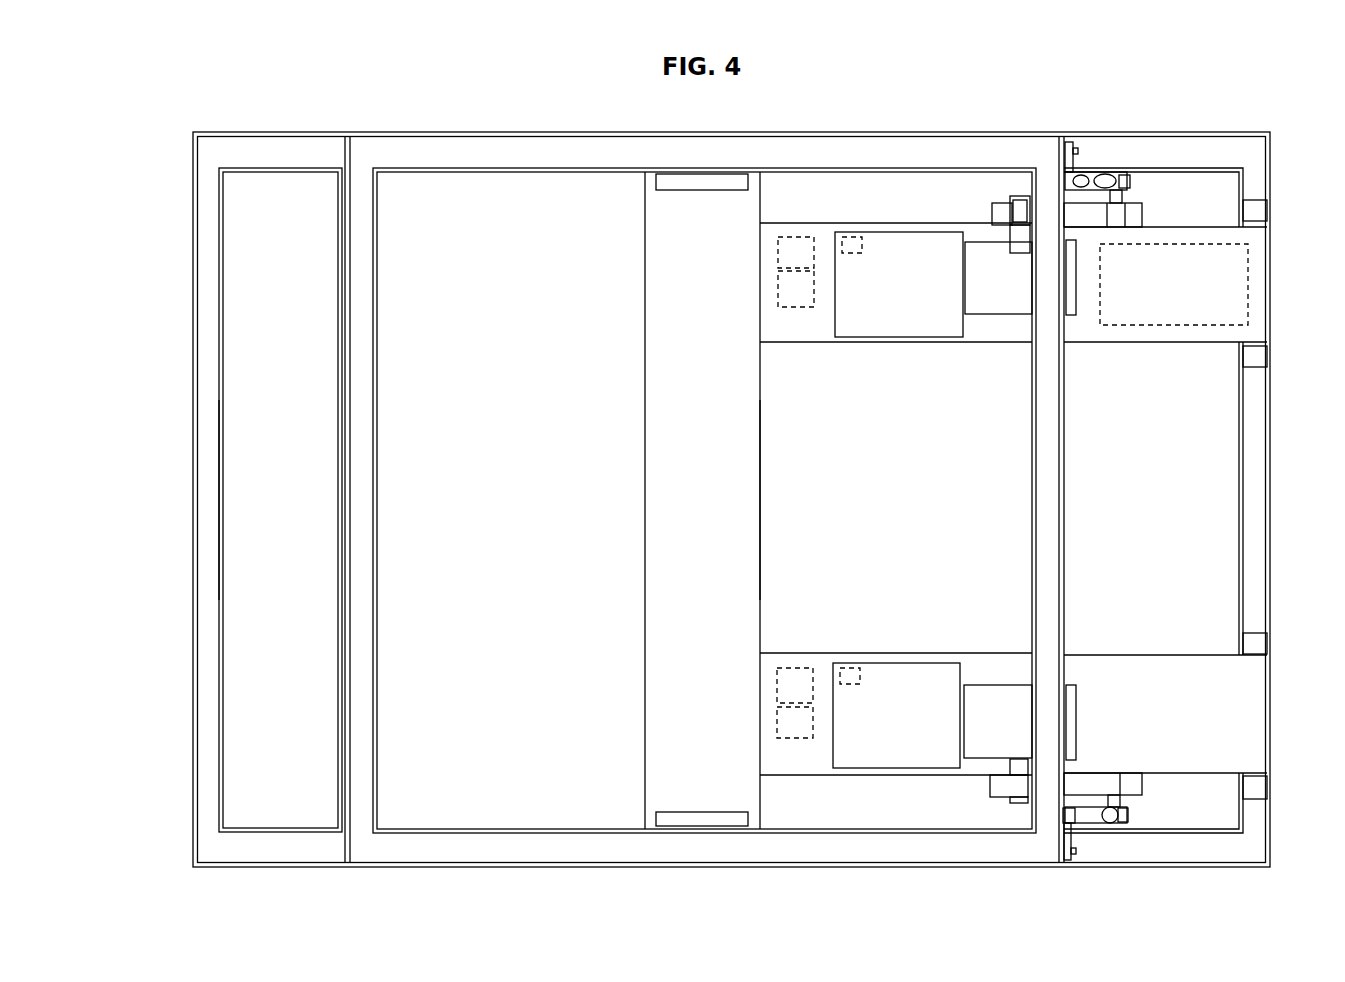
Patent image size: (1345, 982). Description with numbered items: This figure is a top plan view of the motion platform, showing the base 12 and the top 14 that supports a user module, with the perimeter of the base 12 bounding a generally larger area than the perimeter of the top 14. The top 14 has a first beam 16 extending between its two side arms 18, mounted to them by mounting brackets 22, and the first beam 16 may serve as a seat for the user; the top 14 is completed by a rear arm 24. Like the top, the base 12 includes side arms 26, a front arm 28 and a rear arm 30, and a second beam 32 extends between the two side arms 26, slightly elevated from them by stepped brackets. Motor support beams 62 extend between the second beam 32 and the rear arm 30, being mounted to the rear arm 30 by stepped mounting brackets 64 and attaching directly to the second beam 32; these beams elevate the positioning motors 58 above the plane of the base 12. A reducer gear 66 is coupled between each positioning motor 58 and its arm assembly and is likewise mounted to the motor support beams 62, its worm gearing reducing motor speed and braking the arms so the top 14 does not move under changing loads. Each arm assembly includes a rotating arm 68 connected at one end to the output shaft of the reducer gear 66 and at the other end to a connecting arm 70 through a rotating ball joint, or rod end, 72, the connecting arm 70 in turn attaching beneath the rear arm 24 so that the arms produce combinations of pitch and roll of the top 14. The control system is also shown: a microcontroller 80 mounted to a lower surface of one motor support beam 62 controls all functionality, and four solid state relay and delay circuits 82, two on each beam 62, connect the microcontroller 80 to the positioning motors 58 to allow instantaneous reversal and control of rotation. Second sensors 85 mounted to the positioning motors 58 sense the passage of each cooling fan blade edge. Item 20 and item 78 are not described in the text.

The base 12 is at (198, 188).
The top 14 is at (485, 157).
The first beam 16 is at (725, 463).
The side arms 18 is at (913, 165).
The left divider 20 is at (372, 558).
The mounting brackets 22 is at (688, 183).
The rear arm 24 is at (1061, 528).
The side arms 26 is at (281, 166).
The front arm 28 is at (217, 558).
The rear arm 30 is at (1264, 487).
The second beam 32 is at (752, 507).
The positioning motors 58 is at (912, 297).
The motor support beams 62 is at (1096, 342).
The stepped mounting brackets 64 is at (1255, 212).
The reducer gear 66 is at (1003, 295).
The rotating arm 68 is at (1000, 210).
The connecting arm 70 is at (1098, 168).
The rotating ball joint (rod end) 72 is at (1128, 190).
The connector 78 is at (1020, 198).
The microcontroller 80 is at (1162, 322).
The solid state relay and delay circuits (relays) 82 is at (808, 265).
The second sensors 85 is at (852, 238).